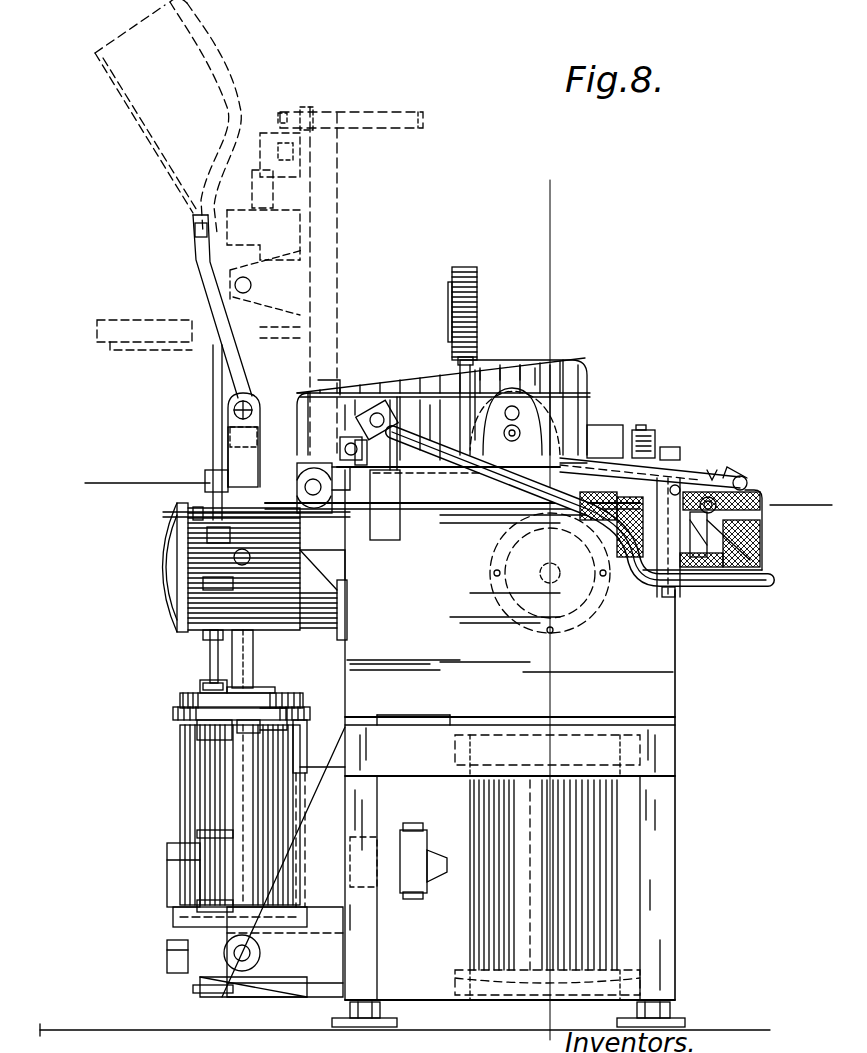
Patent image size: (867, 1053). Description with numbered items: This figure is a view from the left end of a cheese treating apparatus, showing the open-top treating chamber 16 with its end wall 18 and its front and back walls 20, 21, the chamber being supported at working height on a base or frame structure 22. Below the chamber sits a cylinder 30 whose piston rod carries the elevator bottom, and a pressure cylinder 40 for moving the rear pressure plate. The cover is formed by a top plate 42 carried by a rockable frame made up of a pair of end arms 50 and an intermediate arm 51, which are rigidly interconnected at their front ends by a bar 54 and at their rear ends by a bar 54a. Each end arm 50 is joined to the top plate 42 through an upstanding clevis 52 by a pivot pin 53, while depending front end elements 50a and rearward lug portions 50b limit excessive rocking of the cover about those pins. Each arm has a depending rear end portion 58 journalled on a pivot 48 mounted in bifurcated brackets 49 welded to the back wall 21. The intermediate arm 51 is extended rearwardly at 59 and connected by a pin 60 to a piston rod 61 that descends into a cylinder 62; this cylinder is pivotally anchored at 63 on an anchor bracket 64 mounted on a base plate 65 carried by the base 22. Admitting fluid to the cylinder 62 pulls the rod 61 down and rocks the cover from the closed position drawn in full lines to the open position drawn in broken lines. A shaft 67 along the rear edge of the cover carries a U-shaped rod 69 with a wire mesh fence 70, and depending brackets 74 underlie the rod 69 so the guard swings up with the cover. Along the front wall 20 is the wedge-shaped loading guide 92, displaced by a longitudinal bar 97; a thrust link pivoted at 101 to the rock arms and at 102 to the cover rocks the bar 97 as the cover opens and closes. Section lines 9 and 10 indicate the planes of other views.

The section line 9- 9 is at (608, 232).
The section line 10- 10 is at (120, 448).
The main box or treating chamber 16 is at (682, 690).
The end wall 18 is at (635, 700).
The front wall 20 is at (680, 653).
The back wall 21 is at (345, 667).
The base or frame structure 22 is at (681, 842).
The cylinder 30 is at (505, 800).
The pressure cylinder 40 is at (177, 612).
The top plate 42 is at (317, 110).
The pivot 48 is at (305, 487).
The bifurcated bracket 49 is at (250, 556).
The end arm or bracket 50 is at (447, 397).
The depending front end element 50a is at (585, 428).
The depending lug portion 50b is at (372, 480).
The intermediate arm or bracket 51 is at (192, 250).
The upstanding clevis 52 is at (280, 272).
The pivot pin 53 is at (233, 285).
The longitudinal bar 54 is at (572, 390).
The bar 54a is at (327, 380).
The depending rear end portion 58 is at (250, 463).
The rearward extension 59 is at (276, 392).
The pin 60 is at (230, 412).
The piston rod 61 is at (240, 655).
The cylinder 62 is at (267, 805).
The pivotal anchor 63 is at (233, 950).
The anchor bracket 64 is at (203, 978).
The base plate 65 is at (217, 993).
The shaft 67 is at (381, 403).
The U-shaped rod 69 is at (207, 40).
The wire mesh fence 70 is at (127, 113).
The depending bracket 74 is at (393, 110).
The loading guide 92 is at (727, 577).
The longitudinal bar 97 is at (711, 472).
The pivot connection 101 is at (741, 475).
The pivot connection 102 is at (350, 440).